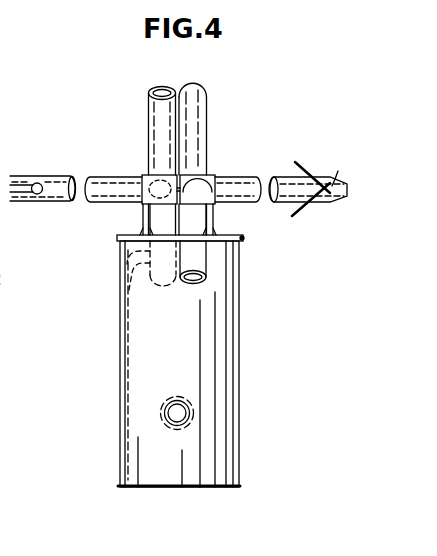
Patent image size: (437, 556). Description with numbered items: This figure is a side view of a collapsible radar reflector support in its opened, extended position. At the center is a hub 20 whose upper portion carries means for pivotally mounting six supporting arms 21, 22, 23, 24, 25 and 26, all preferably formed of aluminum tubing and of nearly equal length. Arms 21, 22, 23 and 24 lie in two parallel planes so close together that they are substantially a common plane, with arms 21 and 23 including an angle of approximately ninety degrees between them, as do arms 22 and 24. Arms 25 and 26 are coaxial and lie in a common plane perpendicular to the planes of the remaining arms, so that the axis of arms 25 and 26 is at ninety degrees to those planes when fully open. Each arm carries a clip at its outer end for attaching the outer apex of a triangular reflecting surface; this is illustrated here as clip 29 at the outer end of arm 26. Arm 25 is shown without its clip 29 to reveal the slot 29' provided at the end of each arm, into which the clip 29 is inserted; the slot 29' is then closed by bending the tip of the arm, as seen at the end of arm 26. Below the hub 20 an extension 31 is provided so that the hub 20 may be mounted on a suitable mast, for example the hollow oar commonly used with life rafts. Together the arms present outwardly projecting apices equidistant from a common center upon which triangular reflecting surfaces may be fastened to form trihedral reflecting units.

The hub 20 is at (243, 238).
The supporting arm 21 is at (207, 140).
The supporting arm 22 is at (206, 252).
The supporting arm 23 is at (125, 258).
The supporting arm 24 is at (148, 138).
The supporting arm 25 is at (52, 202).
The supporting arm 26 is at (292, 202).
The clip 29 is at (320, 196).
The slot 29' is at (181, 172).
The extension 31 is at (239, 365).